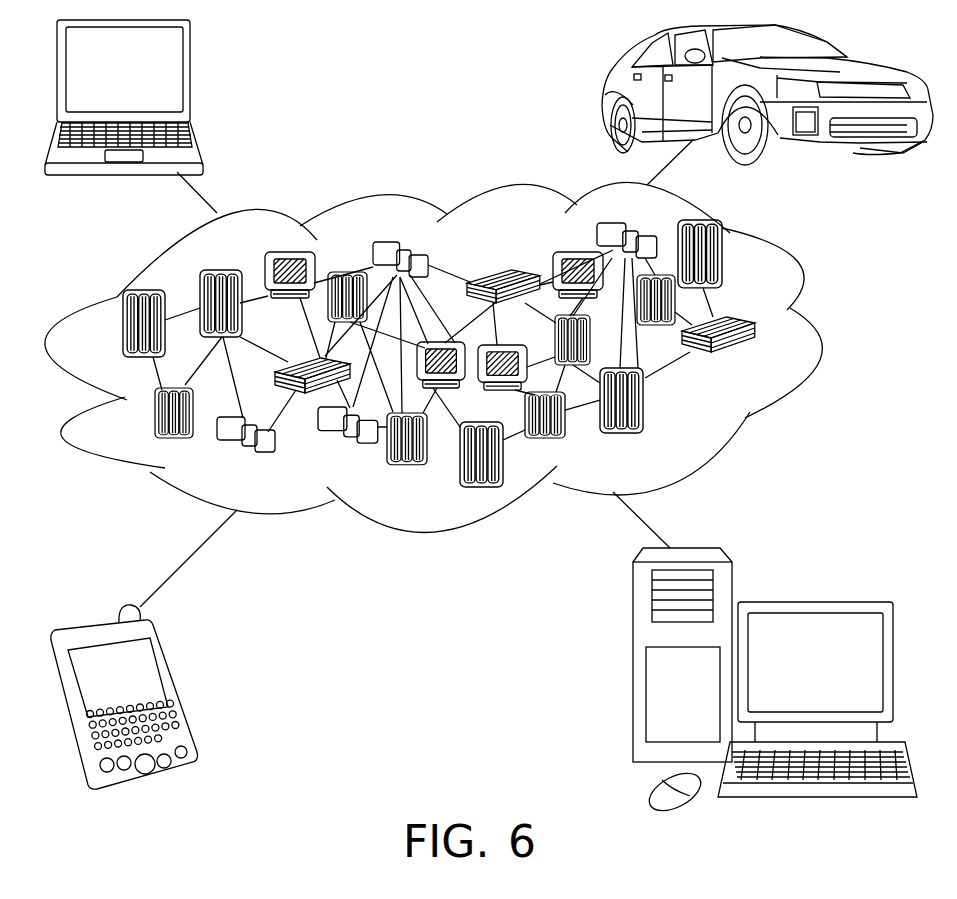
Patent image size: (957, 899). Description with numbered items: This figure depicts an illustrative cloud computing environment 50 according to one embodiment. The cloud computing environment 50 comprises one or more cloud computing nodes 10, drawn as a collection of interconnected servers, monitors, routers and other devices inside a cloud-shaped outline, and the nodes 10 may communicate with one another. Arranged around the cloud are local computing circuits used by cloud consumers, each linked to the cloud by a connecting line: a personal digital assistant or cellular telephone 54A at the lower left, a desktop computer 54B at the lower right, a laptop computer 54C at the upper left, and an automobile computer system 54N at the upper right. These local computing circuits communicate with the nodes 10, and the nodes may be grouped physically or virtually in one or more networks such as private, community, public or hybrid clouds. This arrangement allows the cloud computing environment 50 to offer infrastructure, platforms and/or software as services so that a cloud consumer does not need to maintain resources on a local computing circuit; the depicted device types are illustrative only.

The cloud computing node 10 is at (765, 362).
The cloud computing environment 50 is at (815, 335).
The personal digital assistant or cellular telephone 54A is at (180, 688).
The desktop computer 54B is at (812, 602).
The laptop computer 54C is at (190, 78).
The automobile computer system 54N is at (603, 98).